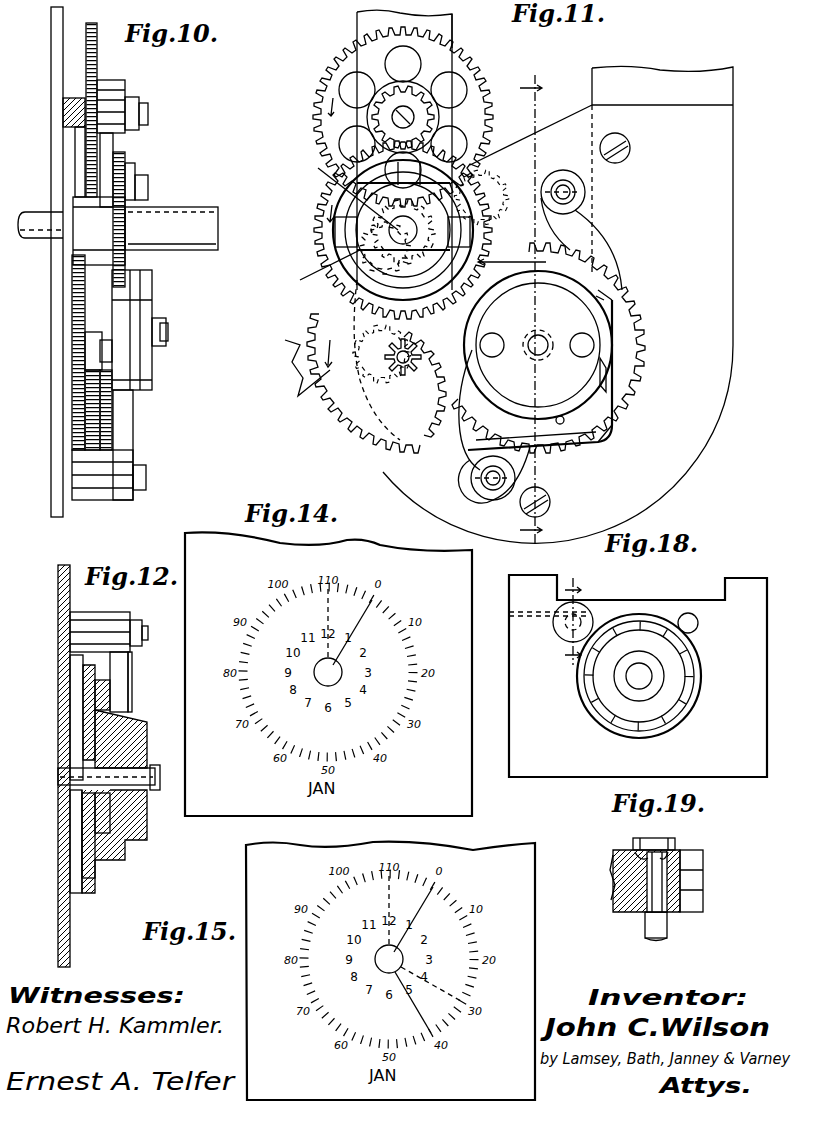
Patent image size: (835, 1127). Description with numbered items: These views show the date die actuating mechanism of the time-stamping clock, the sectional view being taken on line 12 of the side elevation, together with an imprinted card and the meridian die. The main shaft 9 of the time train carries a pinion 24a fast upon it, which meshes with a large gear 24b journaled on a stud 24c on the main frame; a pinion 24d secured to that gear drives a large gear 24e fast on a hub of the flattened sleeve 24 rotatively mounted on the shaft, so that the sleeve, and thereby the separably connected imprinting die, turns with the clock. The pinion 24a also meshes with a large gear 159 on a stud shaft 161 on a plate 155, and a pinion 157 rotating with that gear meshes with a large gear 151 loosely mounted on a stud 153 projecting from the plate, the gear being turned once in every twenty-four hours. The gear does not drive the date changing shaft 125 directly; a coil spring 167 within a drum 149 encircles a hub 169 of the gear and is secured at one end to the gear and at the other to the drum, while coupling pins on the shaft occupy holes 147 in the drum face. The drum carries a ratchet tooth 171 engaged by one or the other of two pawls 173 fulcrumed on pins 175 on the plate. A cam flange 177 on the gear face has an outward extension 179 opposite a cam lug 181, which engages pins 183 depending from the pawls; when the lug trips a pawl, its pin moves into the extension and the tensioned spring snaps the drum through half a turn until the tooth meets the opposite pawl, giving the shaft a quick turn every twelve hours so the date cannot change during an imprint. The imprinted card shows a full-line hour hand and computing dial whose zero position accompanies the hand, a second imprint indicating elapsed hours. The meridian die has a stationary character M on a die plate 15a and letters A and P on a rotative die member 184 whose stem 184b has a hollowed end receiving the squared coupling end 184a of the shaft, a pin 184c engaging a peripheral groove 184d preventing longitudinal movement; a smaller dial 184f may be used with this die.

In FIG. 10, the main shaft 9 is at (22, 238).
In FIG. 11, the main shaft 9 is at (351, 190).
In FIG. 11, the section line 12— 12 is at (531, 312).
In FIG. 18, the die plate 15a is at (543, 770).
In FIG. 19, the die plate 15a is at (625, 888).
In FIG. 10, the flattened sleeve 24 is at (210, 226).
In FIG. 11, the flattened sleeve 24 is at (320, 272).
In FIG. 10, the pinion 24a is at (82, 222).
In FIG. 11, the pinion 24a is at (352, 238).
In FIG. 10, the large gear 24b is at (99, 50).
In FIG. 11, the large gear 24b is at (318, 82).
In FIG. 10, the stud 24c is at (147, 110).
In FIG. 10, the pinion 24d is at (108, 88).
In FIG. 11, the pinion 24d is at (405, 115).
In FIG. 10, the large gear 24e is at (122, 157).
In FIG. 11, the large gear 24e is at (466, 194).
In FIG. 19, the date changing shaft 125 is at (667, 932).
In FIG. 11, the holes 147 is at (495, 334).
In FIG. 10, the drum 149 is at (152, 374).
In FIG. 11, the drum 149 is at (600, 432).
In FIG. 12, the drum 149 is at (134, 842).
In FIG. 10, the large gear 151 is at (78, 438).
In FIG. 11, the large gear 151 is at (641, 388).
In FIG. 12, the large gear 151 is at (82, 852).
In FIG. 10, the stud 153 is at (166, 328).
In FIG. 11, the stud 153 is at (530, 346).
In FIG. 12, the stud 153 is at (152, 788).
In FIG. 10, the plate 155 is at (62, 135).
In FIG. 11, the plate 155 is at (509, 94).
In FIG. 12, the plate 155 is at (60, 718).
In FIG. 10, the pinion 157 is at (90, 350).
In FIG. 11, the pinion 157 is at (413, 370).
In FIG. 10, the large gear 159 is at (78, 305).
In FIG. 11, the large gear 159 is at (348, 438).
In FIG. 10, the stud shaft 161 is at (112, 352).
In FIG. 11, the stud shaft 161 is at (400, 358).
In FIG. 12, the coil spring 167 is at (110, 720).
In FIG. 12, the hub 169 is at (130, 740).
In FIG. 11, the ratchet tooth 171 is at (606, 322).
In FIG. 10, the pawls 173 is at (128, 168).
In FIG. 11, the pawls 173 is at (602, 228).
In FIG. 12, the pawls 173 is at (128, 672).
In FIG. 10, the pins 175 is at (148, 188).
In FIG. 11, the pins 175 is at (572, 196).
In FIG. 12, the pins 175 is at (142, 626).
In FIG. 10, the cam flange 177 is at (110, 414).
In FIG. 11, the cam flange 177 is at (612, 338).
In FIG. 11, the outward extension 179 is at (625, 404).
In FIG. 11, the cam lug 181 is at (610, 372).
In FIG. 11, the pins 183 is at (600, 290).
In FIG. 18, the rotative die member 184 is at (562, 634).
In FIG. 19, the rotative die member 184 is at (672, 846).
In FIG. 19, the squared coupling end 184a is at (703, 890).
In FIG. 19, the stem 184b is at (668, 866).
In FIG. 18, the pin 184c is at (520, 625).
In FIG. 19, the peripheral groove 184d is at (640, 858).
In FIG. 18, the smaller dial 184f is at (662, 676).